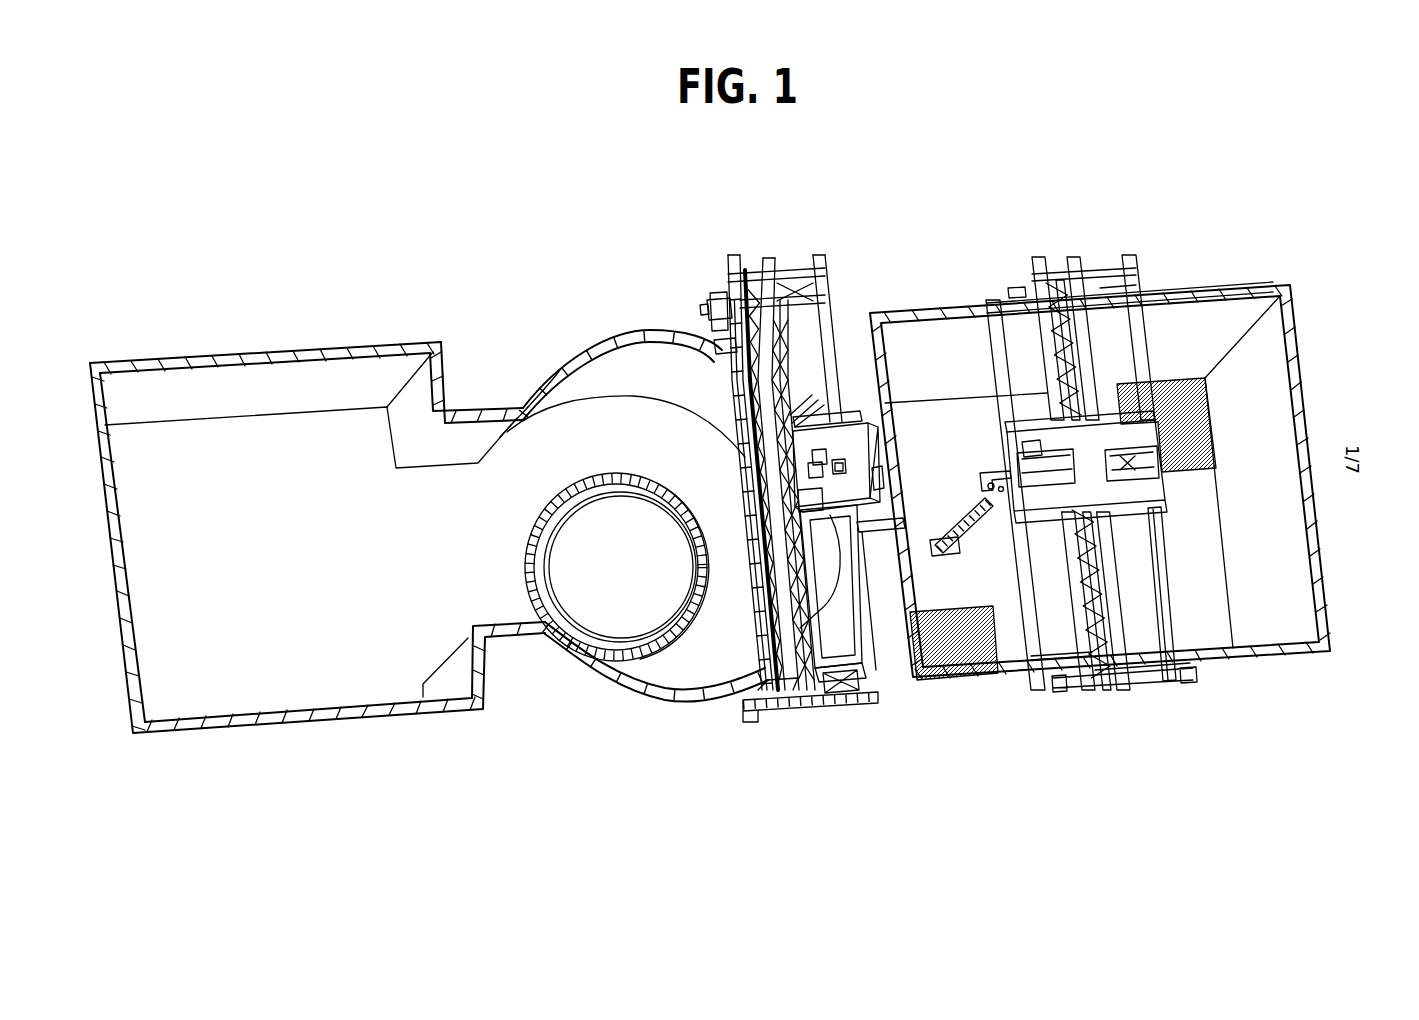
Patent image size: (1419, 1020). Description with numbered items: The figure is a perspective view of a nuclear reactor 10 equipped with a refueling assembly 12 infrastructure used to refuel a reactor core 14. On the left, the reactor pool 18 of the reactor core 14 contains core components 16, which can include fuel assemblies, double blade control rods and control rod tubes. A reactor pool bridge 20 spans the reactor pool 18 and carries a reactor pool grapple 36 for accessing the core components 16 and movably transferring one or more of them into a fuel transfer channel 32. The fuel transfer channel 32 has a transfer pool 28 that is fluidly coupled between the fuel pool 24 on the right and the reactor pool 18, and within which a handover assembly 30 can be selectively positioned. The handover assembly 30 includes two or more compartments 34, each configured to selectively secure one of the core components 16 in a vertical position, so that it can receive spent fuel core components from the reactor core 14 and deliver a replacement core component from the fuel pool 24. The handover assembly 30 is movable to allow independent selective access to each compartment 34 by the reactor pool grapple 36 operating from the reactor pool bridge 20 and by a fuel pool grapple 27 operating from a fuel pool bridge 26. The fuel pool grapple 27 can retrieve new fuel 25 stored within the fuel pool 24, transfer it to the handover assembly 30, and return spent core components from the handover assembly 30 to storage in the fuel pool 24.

The nuclear reactor 10 is at (870, 182).
The refueling assembly 12 is at (1318, 210).
The reactor core 14 is at (602, 455).
The core components 16 is at (672, 487).
The reactor pool 18 is at (507, 432).
The reactor pool bridge 20 is at (835, 520).
The fuel pool 24 is at (1277, 545).
The new fuel 25 is at (1200, 492).
The fuel pool bridge 26 is at (1127, 643).
The fuel pool grapple 27 is at (986, 462).
The transfer pool 28 is at (882, 522).
The handover assembly 30 is at (940, 548).
The fuel transfer channel 32 is at (875, 476).
The compartments 34 is at (953, 520).
The reactor pool grapple 36 is at (843, 460).